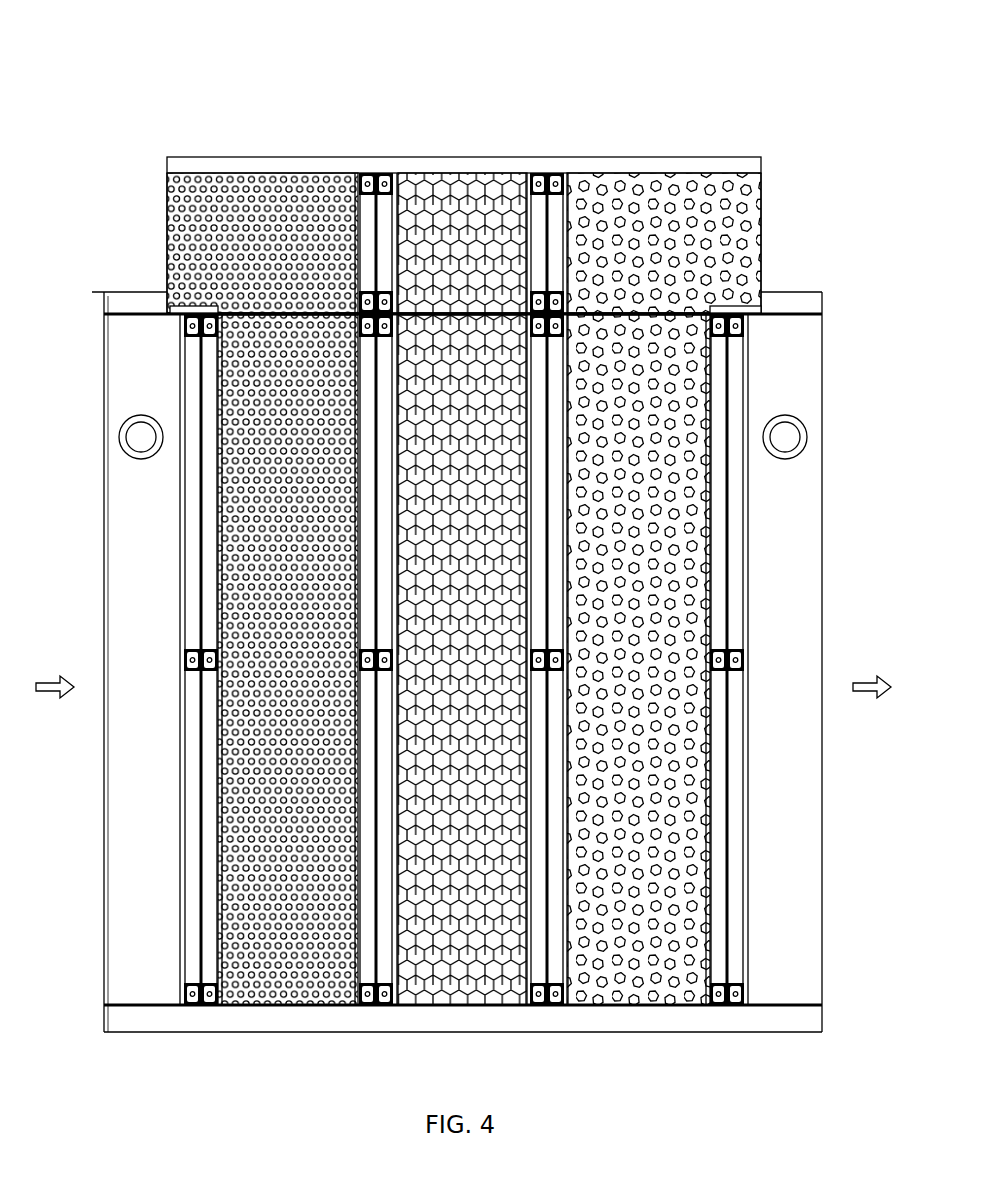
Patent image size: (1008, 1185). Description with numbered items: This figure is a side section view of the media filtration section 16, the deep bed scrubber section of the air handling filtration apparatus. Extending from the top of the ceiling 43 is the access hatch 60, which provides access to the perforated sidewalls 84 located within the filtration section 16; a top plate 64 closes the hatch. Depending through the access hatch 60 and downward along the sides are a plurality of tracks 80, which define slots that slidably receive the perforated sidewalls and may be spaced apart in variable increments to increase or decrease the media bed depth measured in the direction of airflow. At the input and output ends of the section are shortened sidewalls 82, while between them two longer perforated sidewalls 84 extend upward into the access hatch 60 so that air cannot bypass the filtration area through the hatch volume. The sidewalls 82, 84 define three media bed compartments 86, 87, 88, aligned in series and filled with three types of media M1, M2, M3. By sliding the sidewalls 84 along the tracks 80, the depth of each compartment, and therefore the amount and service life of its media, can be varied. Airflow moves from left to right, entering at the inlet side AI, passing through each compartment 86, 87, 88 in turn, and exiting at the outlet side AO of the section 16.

The media filtration section 16 is at (331, 76).
The ceiling 43 is at (131, 313).
The access hatch 60 is at (664, 141).
The top cap plate 64 is at (272, 157).
The tracks 80 is at (508, 201).
The shortened sidewalls 82 is at (202, 625).
The perforated sidewalls 84 is at (392, 625).
The media bed compartment 86 is at (280, 296).
The media bed compartment 87 is at (468, 296).
The media bed compartment 88 is at (628, 296).
The first media M1 is at (232, 462).
The second media M2 is at (447, 1006).
The third media M3 is at (697, 862).
The inlet air flow AI is at (47, 682).
The outlet air flow AO is at (865, 693).